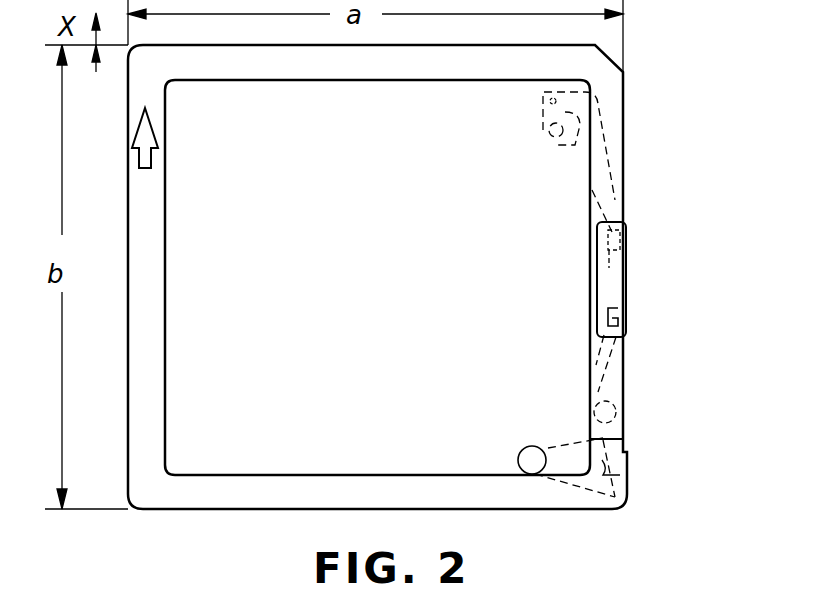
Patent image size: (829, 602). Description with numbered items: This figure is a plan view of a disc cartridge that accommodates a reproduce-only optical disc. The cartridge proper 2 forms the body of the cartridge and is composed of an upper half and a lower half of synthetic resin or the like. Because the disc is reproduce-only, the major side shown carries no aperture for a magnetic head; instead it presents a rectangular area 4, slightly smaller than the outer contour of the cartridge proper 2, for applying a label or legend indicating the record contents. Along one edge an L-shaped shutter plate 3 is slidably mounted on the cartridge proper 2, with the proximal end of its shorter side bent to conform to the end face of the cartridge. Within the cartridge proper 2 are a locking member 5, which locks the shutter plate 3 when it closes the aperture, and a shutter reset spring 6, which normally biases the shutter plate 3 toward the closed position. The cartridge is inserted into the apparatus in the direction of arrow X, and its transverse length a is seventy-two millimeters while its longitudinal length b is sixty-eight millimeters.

The cartridge proper 2 is at (630, 115).
The shutter plate 3 is at (617, 282).
The rectangular area 4 is at (178, 390).
The locking member 5 is at (625, 175).
The shutter reset spring 6 is at (628, 475).